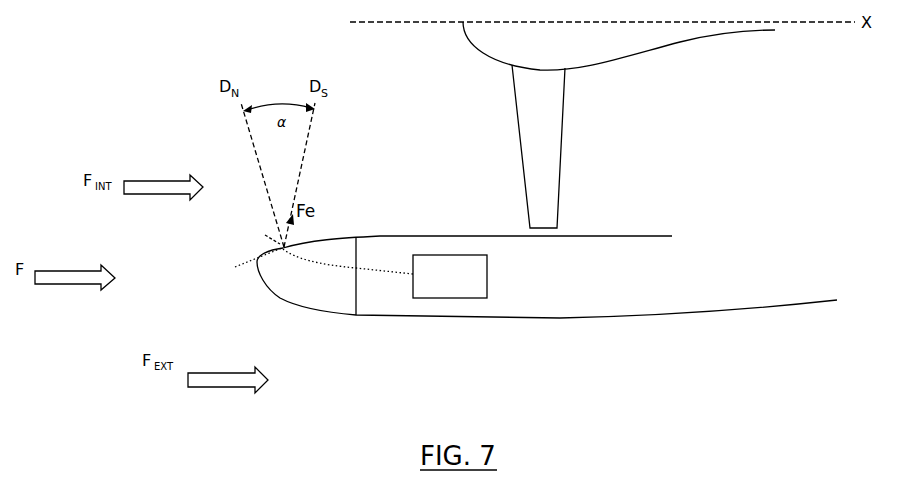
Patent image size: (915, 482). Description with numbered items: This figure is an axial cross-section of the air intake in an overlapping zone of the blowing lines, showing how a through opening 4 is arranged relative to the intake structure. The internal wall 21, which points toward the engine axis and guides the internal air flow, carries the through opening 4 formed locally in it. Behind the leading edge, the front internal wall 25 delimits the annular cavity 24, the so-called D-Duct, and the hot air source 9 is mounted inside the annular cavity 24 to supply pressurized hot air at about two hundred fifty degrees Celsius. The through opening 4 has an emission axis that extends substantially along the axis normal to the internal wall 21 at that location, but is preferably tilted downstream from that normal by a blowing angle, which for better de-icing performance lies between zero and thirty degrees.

The through opening 4 is at (282, 245).
The hot air source 9 is at (450, 276).
The internal wall 21 is at (433, 236).
The annular cavity 24 is at (322, 294).
The front internal wall 25 is at (357, 270).